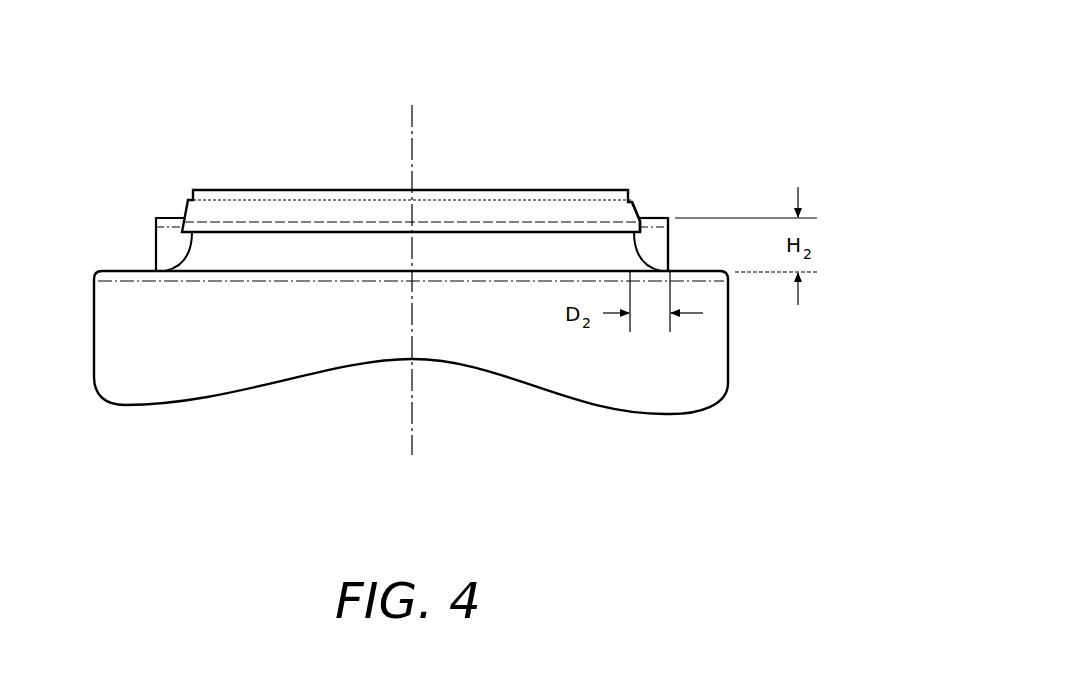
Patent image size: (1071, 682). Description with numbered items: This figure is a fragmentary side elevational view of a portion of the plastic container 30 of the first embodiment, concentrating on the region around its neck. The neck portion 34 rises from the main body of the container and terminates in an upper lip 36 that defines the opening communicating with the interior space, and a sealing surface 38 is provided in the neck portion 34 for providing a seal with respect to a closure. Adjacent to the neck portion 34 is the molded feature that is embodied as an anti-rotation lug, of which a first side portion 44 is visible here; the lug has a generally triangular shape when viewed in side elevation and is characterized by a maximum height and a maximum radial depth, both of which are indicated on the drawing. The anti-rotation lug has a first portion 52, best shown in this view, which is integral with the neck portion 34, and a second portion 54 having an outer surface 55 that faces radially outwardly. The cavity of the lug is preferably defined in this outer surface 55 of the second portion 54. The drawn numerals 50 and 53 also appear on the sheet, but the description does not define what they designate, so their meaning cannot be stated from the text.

The plastic container 30 is at (696, 104).
The neck portion 34 is at (208, 257).
The upper lip 36 is at (280, 190).
The sealing surface 38 is at (200, 210).
The first side portion 44 is at (648, 243).
The fillet surface 50 is at (633, 258).
The first portion 52 is at (637, 232).
The shoulder outer wall 53 is at (672, 255).
The second portion 54 is at (670, 235).
The outer surface 55 is at (672, 262).